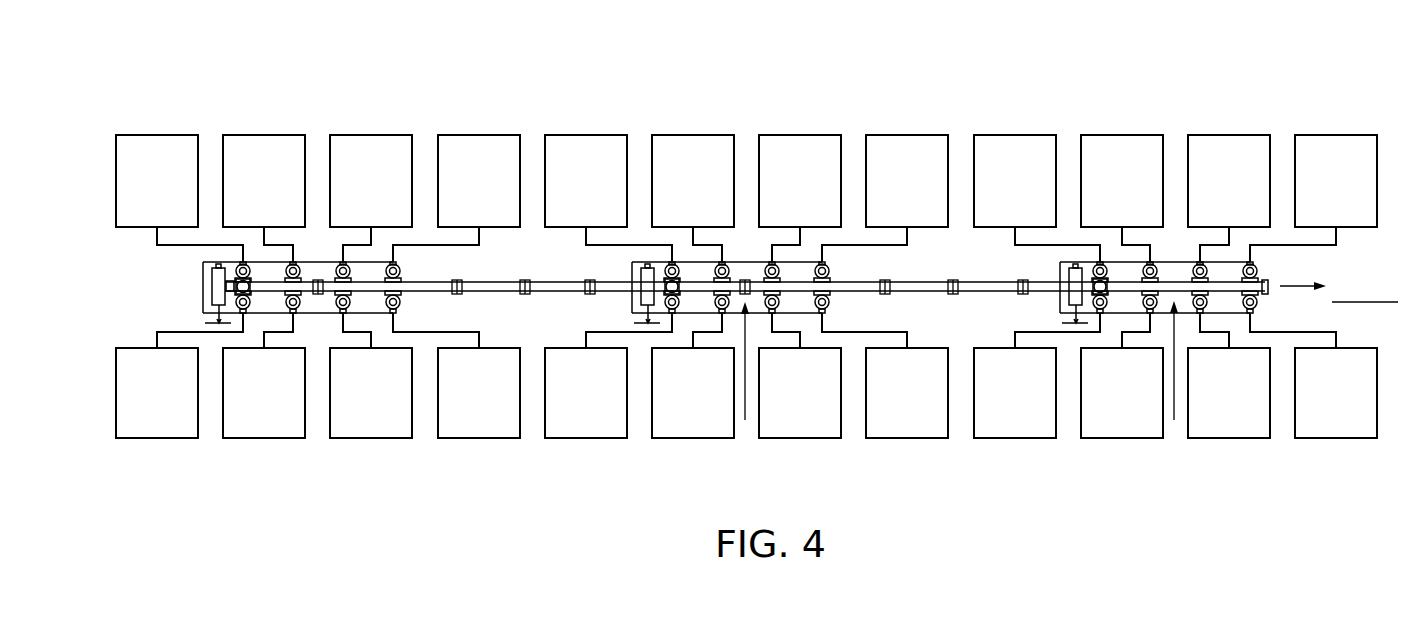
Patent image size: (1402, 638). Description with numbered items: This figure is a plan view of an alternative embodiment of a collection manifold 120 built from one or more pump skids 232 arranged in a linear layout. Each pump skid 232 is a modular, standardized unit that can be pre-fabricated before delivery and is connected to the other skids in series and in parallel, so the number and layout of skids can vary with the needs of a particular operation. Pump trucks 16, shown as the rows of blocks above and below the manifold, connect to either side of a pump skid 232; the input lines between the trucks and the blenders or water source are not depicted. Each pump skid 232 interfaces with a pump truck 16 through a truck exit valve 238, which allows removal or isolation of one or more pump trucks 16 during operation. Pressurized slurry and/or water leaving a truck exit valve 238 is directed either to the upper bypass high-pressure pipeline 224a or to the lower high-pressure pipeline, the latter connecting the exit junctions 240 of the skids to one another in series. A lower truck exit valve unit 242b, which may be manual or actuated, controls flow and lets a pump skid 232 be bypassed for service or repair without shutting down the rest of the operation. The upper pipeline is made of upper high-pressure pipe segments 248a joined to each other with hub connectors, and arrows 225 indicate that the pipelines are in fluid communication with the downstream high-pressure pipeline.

The collection manifold 120 is at (463, 78).
The pump truck 16 is at (1226, 134).
The pump skid 232 is at (749, 238).
The upper high-pressure pipe segment 248a is at (980, 280).
The truck exit valve 238 is at (1262, 264).
The upper bypass high-pressure pipeline 224a is at (433, 292).
The exit junction 240 is at (745, 420).
The lower truck exit valve unit 242b is at (1063, 310).
The arrows 225 is at (1274, 288).